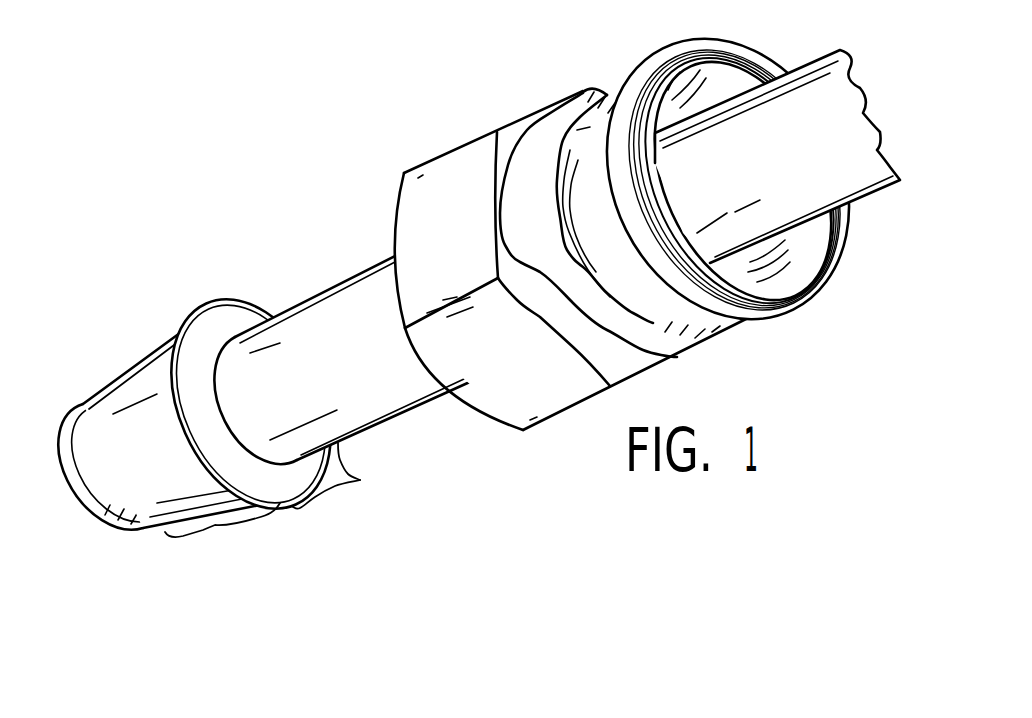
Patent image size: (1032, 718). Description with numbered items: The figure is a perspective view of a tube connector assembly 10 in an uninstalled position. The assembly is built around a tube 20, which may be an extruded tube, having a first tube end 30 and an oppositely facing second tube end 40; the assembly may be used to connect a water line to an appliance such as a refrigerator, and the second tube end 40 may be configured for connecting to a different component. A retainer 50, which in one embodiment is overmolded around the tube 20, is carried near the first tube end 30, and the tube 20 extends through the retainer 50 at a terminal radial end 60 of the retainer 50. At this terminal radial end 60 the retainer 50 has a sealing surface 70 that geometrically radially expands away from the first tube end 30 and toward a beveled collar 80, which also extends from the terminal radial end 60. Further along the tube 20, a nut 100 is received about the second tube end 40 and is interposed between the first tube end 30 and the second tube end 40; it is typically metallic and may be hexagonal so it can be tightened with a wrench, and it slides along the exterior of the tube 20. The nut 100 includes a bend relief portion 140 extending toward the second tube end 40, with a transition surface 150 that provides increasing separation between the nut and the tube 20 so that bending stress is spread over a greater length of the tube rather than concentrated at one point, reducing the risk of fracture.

The tube connector assembly 10 is at (540, 70).
The tube 20 is at (323, 313).
The first tube end 30 is at (56, 442).
The second tube end 40 is at (874, 74).
The retainer 50 is at (153, 373).
The terminal radial end 60 is at (75, 416).
The sealing surface 70 is at (215, 526).
The beveled collar 80 is at (360, 480).
The nut 100 is at (452, 185).
The bend relief portion 140 is at (738, 318).
The transition surface 150 is at (792, 246).